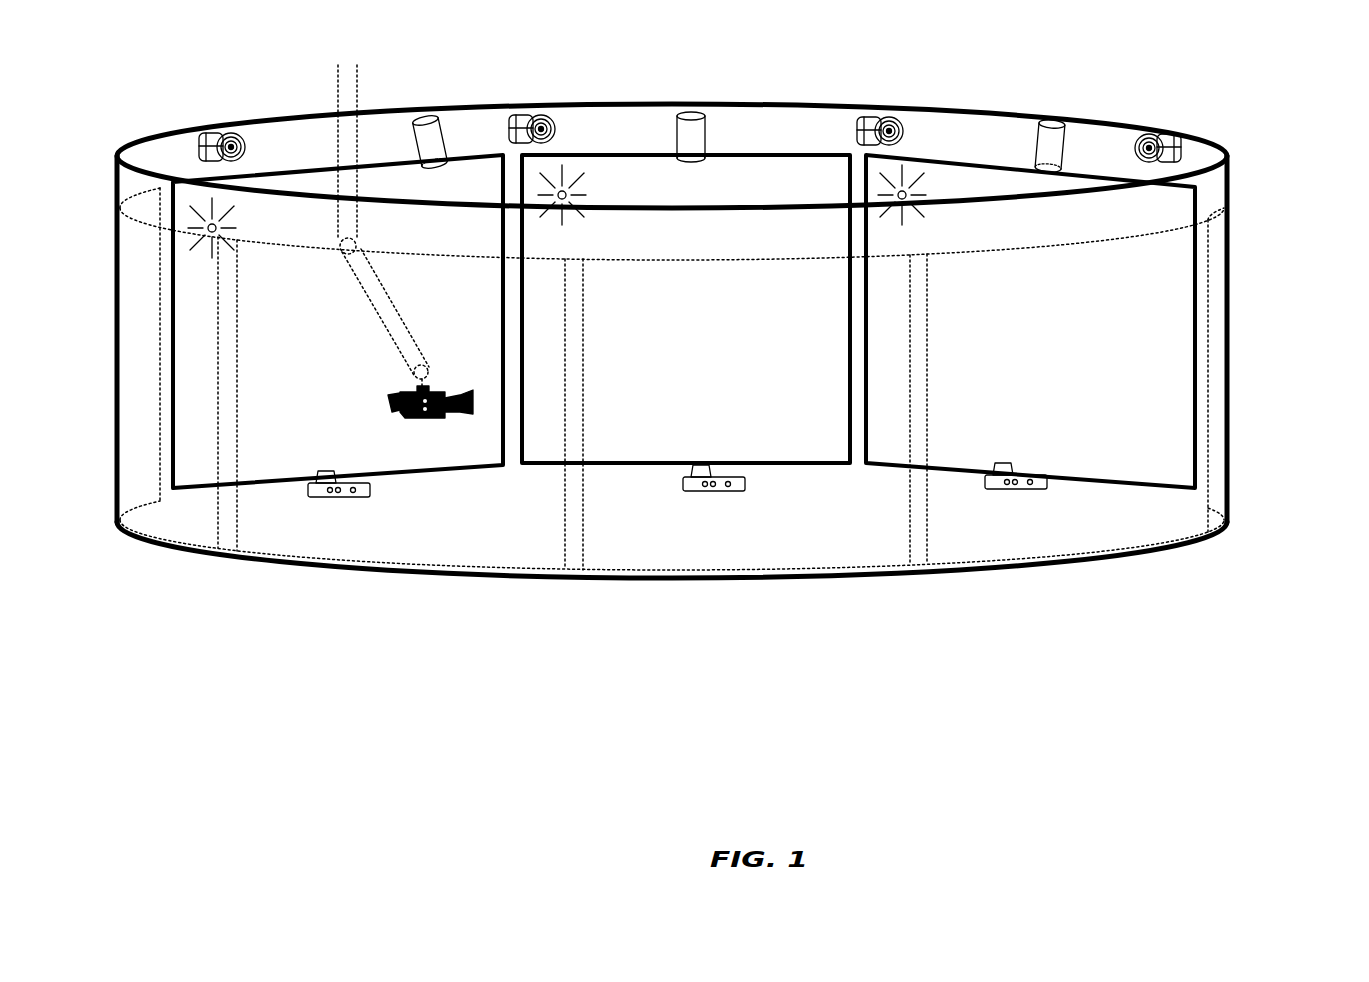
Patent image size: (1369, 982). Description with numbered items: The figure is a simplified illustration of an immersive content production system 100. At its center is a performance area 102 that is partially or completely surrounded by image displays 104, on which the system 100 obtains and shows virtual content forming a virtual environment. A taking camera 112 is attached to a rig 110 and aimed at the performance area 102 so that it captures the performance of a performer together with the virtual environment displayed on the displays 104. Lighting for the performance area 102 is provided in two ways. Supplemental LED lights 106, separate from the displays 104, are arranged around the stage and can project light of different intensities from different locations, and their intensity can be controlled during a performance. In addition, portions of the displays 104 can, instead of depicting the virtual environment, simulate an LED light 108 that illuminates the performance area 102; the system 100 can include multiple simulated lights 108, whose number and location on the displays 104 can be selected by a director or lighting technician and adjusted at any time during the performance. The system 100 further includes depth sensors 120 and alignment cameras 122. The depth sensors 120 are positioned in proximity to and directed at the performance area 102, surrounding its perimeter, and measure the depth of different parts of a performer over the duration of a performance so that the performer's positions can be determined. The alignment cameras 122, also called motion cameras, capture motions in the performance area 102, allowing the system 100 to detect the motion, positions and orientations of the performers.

The immersive content production system 100 is at (699, 342).
The performance area 102 is at (1228, 520).
The image displays 104 is at (800, 155).
The supplemental LED lights 106 is at (426, 108).
The simulated LED light 108 is at (218, 228).
The rig 110 is at (348, 95).
The taking camera 112 is at (398, 412).
The depth sensors 120 is at (372, 490).
The alignment cameras 122 is at (244, 143).